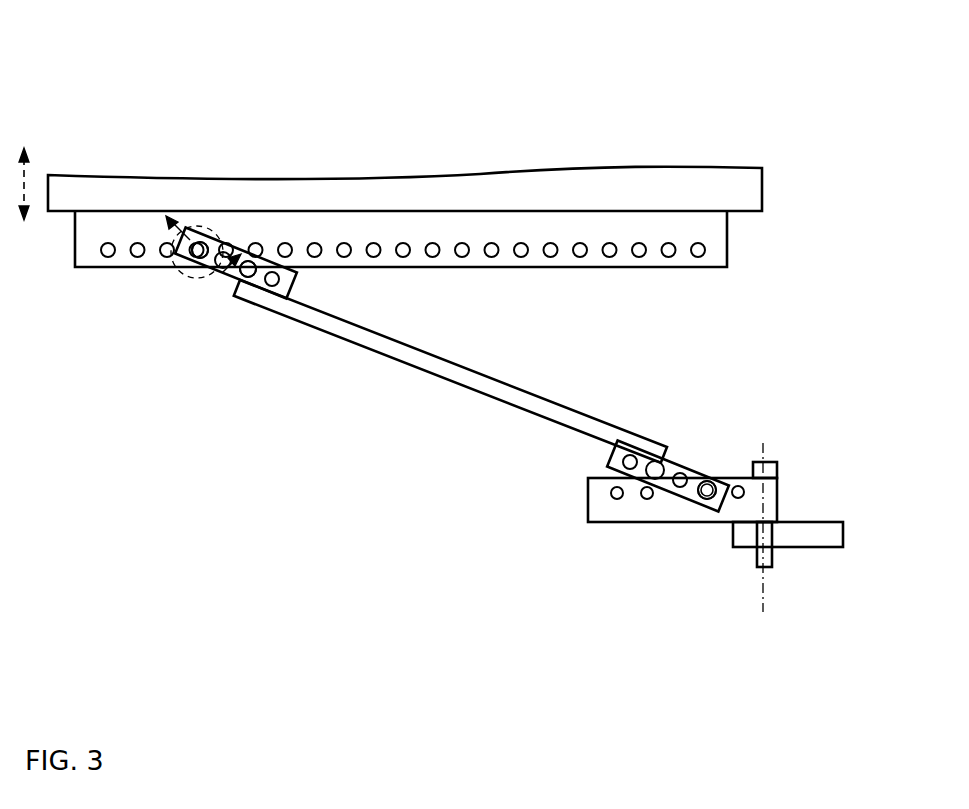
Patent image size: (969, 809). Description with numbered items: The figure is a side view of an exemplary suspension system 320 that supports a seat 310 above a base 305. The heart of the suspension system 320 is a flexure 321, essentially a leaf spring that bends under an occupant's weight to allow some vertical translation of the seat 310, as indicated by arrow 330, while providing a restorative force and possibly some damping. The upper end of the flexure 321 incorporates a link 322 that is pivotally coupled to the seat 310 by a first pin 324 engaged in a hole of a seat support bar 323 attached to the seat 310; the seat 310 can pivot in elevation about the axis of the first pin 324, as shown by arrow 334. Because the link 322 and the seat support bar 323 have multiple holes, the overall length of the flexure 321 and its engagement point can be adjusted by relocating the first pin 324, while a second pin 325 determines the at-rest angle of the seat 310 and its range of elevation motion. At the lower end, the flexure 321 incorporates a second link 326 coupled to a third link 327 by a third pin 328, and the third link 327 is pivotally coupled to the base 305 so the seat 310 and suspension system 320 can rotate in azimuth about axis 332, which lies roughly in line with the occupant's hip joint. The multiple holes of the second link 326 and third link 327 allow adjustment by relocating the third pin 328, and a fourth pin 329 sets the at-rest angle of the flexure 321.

The base 305 is at (812, 548).
The seat 310 is at (438, 176).
The suspension system 320 is at (256, 461).
The flexure 321 is at (433, 356).
The link 322 is at (294, 286).
The seat support bar 323 is at (693, 268).
The first pin 324 is at (202, 248).
The second pin 325 is at (250, 257).
The second link 326 is at (704, 493).
The third link 327 is at (588, 496).
The third pin 328 is at (710, 484).
The fourth pin 329 is at (656, 466).
The arrow 330 is at (30, 148).
The axis 332 is at (761, 588).
The arrow 334 is at (187, 281).